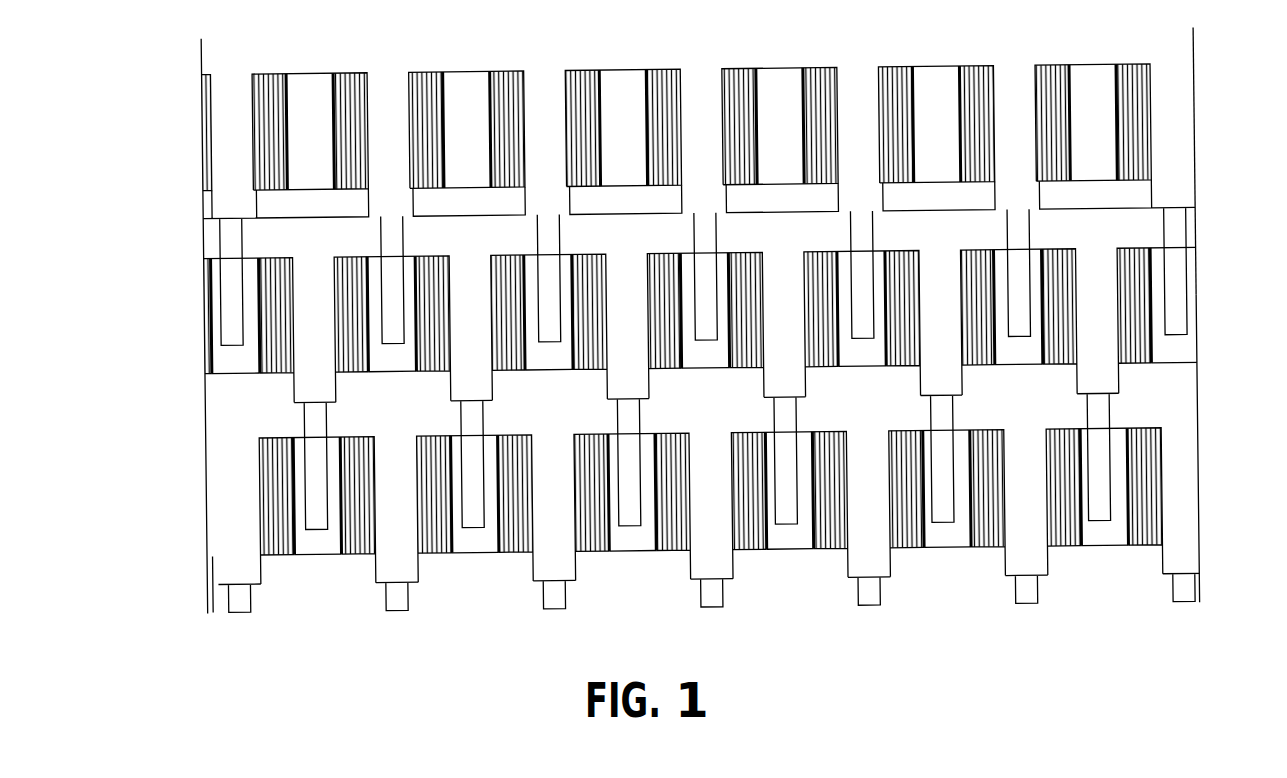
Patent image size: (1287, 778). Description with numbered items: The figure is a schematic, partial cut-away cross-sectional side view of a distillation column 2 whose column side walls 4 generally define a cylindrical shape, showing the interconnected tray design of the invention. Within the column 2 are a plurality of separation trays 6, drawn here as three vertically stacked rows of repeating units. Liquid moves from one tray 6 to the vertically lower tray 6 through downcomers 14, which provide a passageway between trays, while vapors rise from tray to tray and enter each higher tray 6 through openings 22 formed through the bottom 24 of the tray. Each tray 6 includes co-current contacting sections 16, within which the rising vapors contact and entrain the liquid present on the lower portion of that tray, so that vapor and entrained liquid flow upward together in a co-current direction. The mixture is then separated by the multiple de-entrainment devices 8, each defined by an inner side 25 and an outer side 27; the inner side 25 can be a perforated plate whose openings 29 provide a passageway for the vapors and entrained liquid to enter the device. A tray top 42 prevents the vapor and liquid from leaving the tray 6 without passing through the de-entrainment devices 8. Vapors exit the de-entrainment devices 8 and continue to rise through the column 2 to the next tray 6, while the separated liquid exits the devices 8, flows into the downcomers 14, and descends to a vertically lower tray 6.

The distillation column 2 is at (1212, 122).
The column side walls 4 is at (1200, 467).
The separation trays 6 is at (225, 457).
The de-entrainment devices 8 is at (1055, 457).
The downcomers 14 is at (777, 420).
The co-current contacting sections 16 is at (953, 544).
The openings 22 is at (873, 383).
The bottom of the tray 24 is at (591, 398).
The inner side 25 is at (728, 278).
The outer side 27 is at (888, 462).
The openings 29 is at (1043, 333).
The tray top 42 is at (1143, 432).